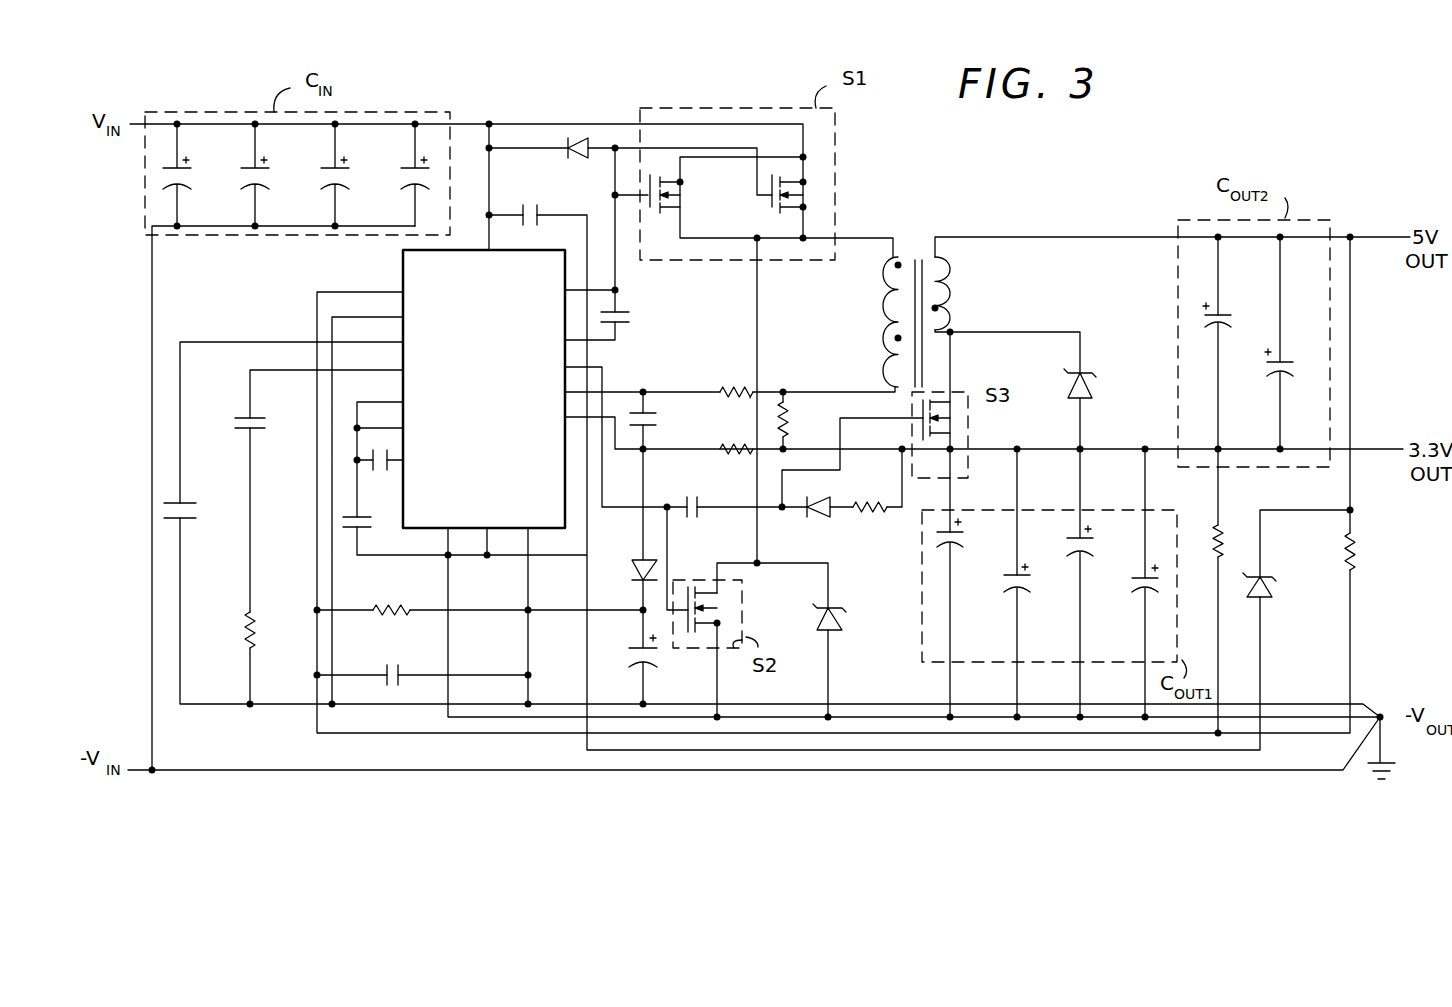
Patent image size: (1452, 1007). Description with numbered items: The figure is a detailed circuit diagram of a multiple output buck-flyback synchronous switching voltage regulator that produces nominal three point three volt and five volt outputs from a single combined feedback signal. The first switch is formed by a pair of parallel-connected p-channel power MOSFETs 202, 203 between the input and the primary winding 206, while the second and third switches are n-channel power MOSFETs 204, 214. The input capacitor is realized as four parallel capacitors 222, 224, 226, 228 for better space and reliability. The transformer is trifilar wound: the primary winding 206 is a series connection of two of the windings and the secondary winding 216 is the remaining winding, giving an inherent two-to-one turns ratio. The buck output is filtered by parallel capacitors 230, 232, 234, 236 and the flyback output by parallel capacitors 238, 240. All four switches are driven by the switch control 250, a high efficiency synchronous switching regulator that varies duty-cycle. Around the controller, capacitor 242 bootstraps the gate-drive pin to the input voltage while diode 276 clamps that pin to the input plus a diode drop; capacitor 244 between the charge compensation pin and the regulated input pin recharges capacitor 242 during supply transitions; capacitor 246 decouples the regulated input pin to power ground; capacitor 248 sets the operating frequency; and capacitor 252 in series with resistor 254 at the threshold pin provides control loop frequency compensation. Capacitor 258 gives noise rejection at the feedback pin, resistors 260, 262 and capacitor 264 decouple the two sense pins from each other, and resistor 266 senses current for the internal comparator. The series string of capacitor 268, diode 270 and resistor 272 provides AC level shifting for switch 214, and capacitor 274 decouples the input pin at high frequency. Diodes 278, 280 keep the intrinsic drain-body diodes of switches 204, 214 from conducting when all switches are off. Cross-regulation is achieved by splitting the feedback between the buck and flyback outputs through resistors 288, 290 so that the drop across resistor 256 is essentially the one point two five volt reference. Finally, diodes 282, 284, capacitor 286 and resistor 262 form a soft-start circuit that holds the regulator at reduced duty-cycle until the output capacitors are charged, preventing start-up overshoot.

The p-channel power MOSFET 202 is at (666, 223).
The p-channel power MOSFET 203 is at (770, 211).
The n-channel power MOSFET 204 is at (730, 606).
The primary winding 206 is at (888, 325).
The n-channel power MOSFET 214 is at (978, 408).
The secondary winding 216 is at (943, 288).
The input capacitor 222 is at (192, 183).
The input capacitor 224 is at (270, 183).
The input capacitor 226 is at (352, 183).
The input capacitor 228 is at (408, 162).
The output capacitor 230 is at (972, 550).
The output capacitor 232 is at (1038, 586).
The output capacitor 234 is at (1070, 552).
The output capacitor 236 is at (1134, 597).
The output capacitor 238 is at (1246, 308).
The output capacitor 240 is at (1308, 352).
The capacitor 242 is at (630, 316).
The capacitor 244 is at (380, 473).
The capacitor 246 is at (340, 520).
The capacitor 248 is at (198, 512).
The switch control 250 is at (403, 271).
The capacitor 252 is at (268, 421).
The resistor 254 is at (282, 612).
The resistor 256 is at (394, 595).
The capacitor 258 is at (398, 634).
The resistor 260 is at (730, 376).
The resistor 262 is at (737, 439).
The capacitor 264 is at (657, 421).
The resistor 266 is at (790, 420).
The capacitor 268 is at (705, 478).
The diode 270 is at (828, 524).
The resistor 272 is at (886, 488).
The capacitor 274 is at (531, 183).
The diode 276 is at (565, 168).
The diode 278 is at (850, 621).
The diode 280 is at (1095, 393).
The diode 282 is at (631, 570).
The diode 284 is at (1276, 582).
The capacitor 286 is at (662, 655).
The resistor 288 is at (1228, 530).
The resistor 290 is at (1360, 550).